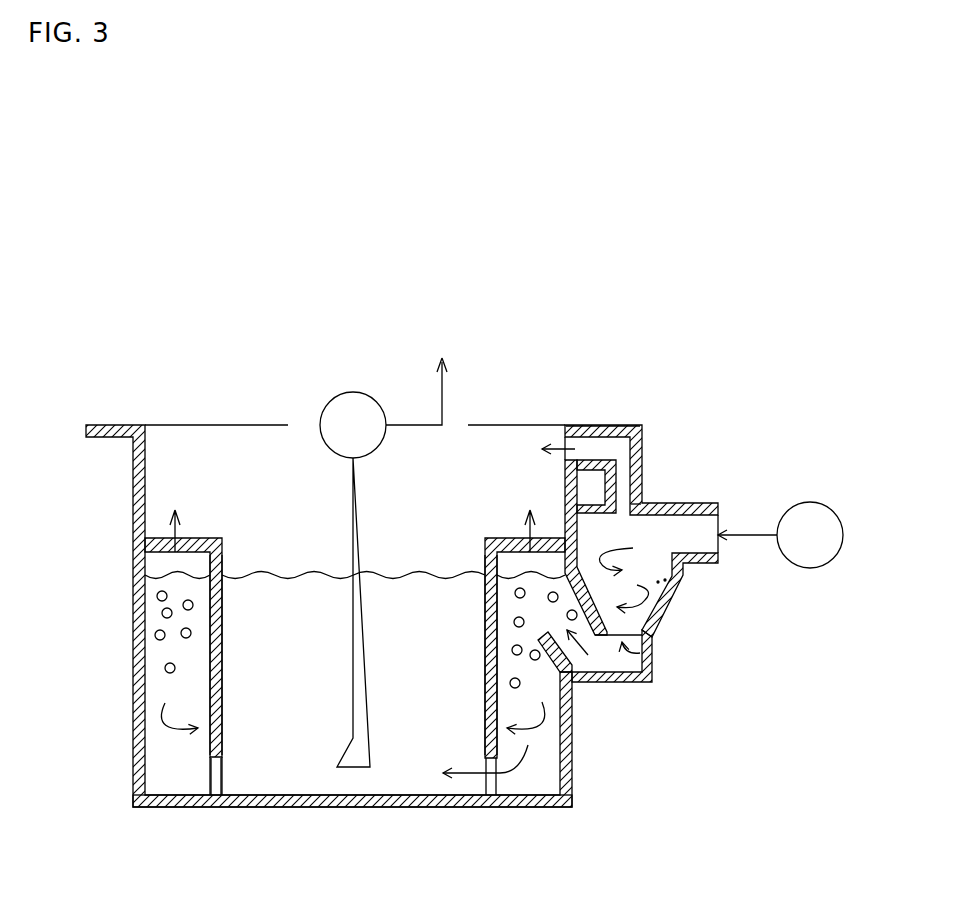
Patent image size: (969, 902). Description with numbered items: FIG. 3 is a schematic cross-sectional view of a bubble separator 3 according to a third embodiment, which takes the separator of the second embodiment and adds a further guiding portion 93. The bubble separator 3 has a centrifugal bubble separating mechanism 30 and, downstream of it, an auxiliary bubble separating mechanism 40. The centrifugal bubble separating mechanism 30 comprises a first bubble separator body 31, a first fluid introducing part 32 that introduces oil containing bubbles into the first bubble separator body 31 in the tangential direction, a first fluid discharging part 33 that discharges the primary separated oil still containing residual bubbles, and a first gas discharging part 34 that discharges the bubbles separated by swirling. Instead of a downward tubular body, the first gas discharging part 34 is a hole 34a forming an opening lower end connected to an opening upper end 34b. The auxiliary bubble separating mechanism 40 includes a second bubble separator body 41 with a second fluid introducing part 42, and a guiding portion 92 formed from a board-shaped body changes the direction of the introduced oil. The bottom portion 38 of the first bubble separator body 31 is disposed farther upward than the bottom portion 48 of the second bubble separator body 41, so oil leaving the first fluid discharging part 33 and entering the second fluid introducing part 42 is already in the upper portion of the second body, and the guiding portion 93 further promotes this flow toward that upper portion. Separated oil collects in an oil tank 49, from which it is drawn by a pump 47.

The bubble separator 3 is at (647, 230).
The centrifugal bubble separating mechanism 30 is at (653, 375).
The first bubble separator body 31 is at (677, 598).
The first fluid introducing part 32 is at (695, 527).
The first fluid discharging part 33 is at (645, 652).
The first gas discharging part 34 is at (645, 446).
The hole 34a is at (641, 516).
The opening upper end 34b is at (567, 425).
The bottom portion 38 is at (654, 635).
The auxiliary bubble separating mechanism 40 is at (347, 323).
The second bubble separator body 41 is at (133, 621).
The second fluid introducing part 42 is at (613, 653).
The pump 47 is at (326, 399).
The bottom portion 48 is at (317, 806).
The oil tank 49 is at (290, 810).
The guiding portion 92 is at (485, 655).
The guiding portion 93 is at (565, 650).